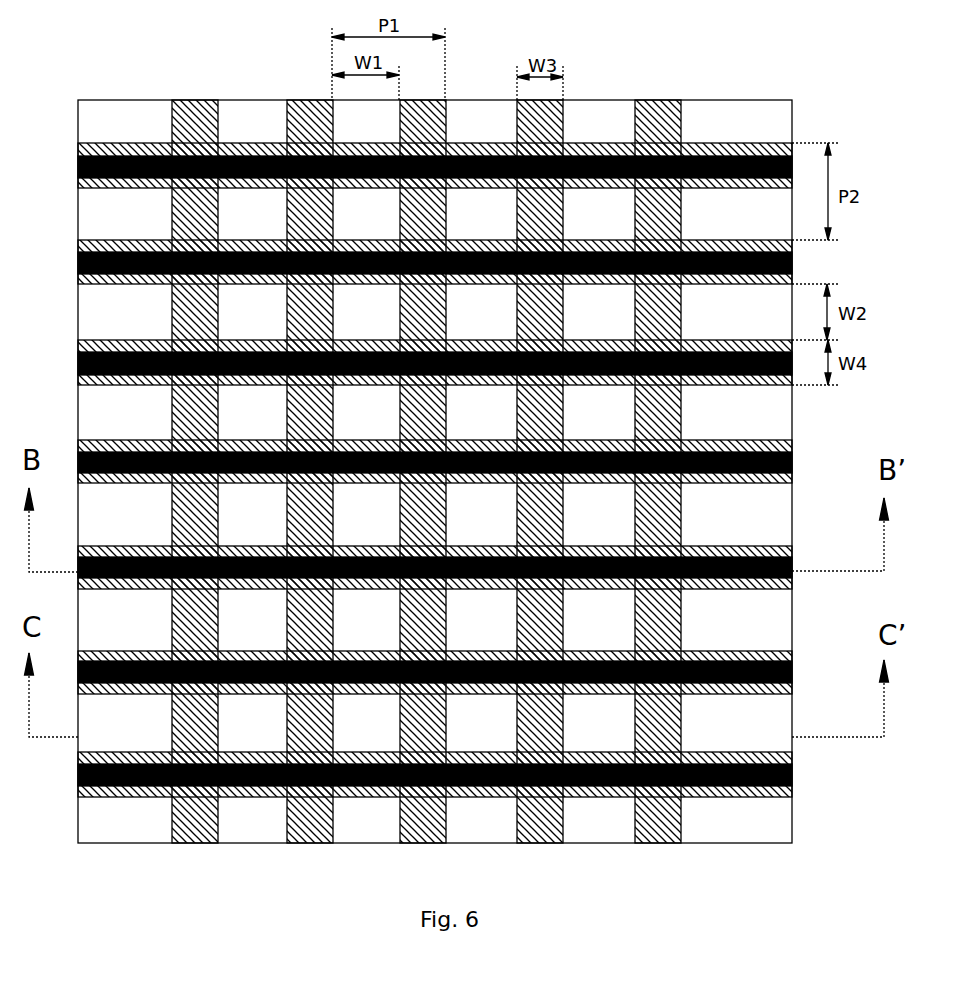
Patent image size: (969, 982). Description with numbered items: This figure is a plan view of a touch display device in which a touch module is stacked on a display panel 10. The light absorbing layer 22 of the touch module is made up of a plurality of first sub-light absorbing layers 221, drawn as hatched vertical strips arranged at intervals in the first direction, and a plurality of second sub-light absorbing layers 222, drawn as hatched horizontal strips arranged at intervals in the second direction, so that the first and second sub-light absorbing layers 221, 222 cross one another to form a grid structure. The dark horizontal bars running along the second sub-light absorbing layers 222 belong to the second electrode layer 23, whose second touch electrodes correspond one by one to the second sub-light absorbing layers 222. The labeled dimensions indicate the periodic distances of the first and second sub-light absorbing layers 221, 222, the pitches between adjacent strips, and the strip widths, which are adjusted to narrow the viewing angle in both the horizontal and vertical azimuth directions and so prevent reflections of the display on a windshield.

The display panel 10 is at (745, 130).
The light absorbing layer 22 is at (435, 422).
The first sub-light absorbing layers 221 is at (550, 105).
The second sub-light absorbing layers 222 is at (605, 147).
The second electrode layer 23 is at (112, 143).